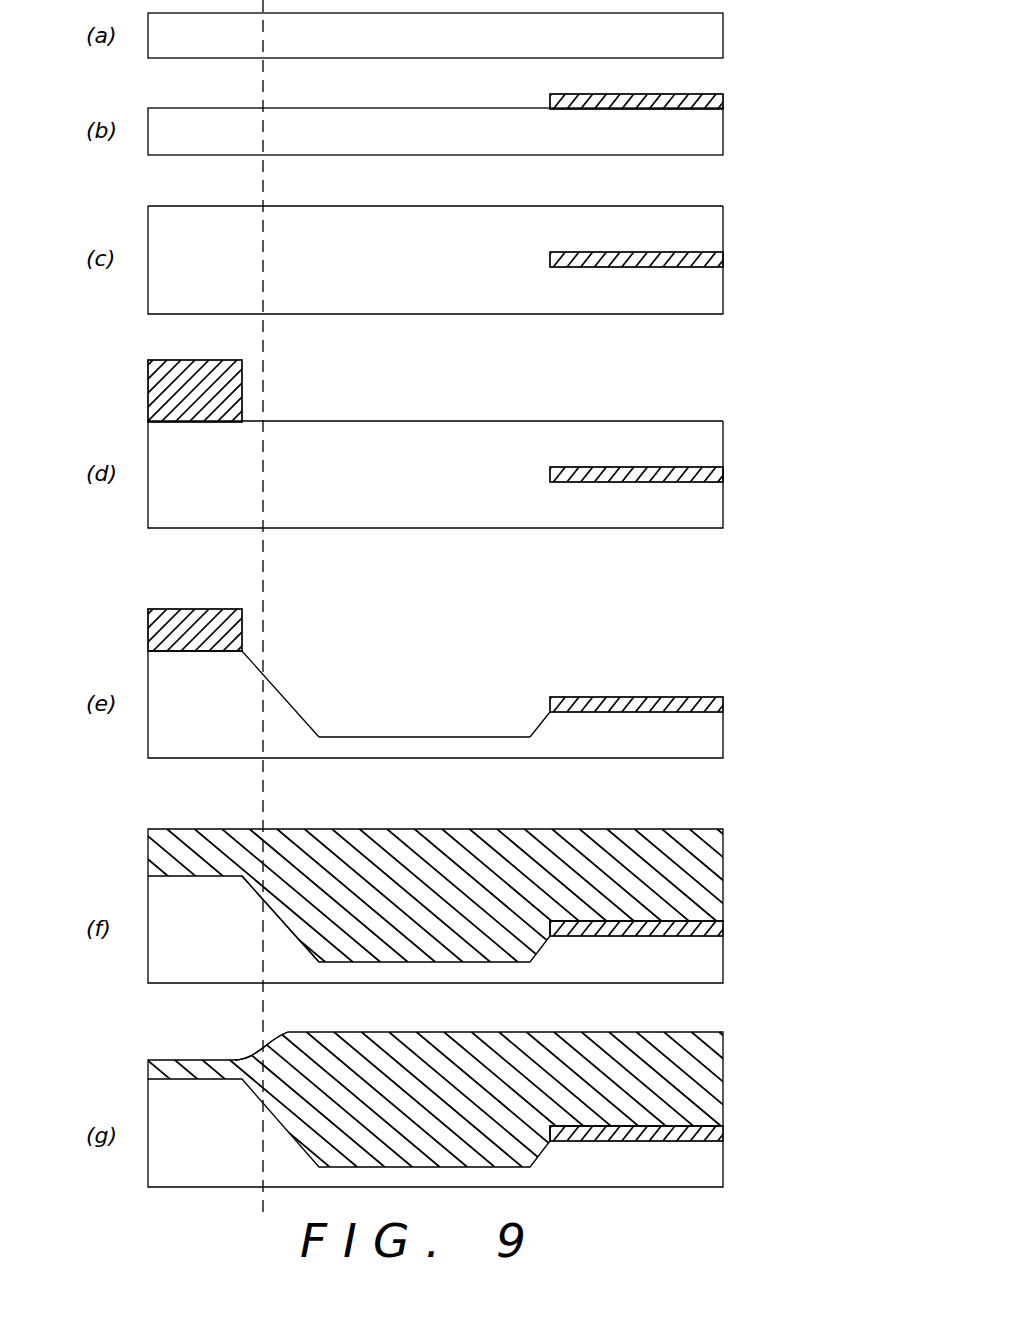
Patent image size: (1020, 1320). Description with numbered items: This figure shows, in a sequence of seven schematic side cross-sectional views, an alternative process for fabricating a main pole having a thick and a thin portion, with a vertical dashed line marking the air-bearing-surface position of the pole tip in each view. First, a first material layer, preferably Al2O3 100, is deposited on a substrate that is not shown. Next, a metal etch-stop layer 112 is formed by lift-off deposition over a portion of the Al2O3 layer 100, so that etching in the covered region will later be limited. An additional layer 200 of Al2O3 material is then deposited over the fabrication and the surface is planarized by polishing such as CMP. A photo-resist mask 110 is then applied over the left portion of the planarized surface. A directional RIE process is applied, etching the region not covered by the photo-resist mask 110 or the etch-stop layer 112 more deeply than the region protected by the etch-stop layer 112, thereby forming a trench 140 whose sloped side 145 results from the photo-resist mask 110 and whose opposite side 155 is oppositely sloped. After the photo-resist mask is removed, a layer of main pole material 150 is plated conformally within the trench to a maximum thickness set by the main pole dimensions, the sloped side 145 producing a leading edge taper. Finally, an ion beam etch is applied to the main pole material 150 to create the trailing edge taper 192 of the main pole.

The Al2O3 layer 100 is at (710, 31).
The metal etch-stop layer 112 is at (712, 101).
The additional Al2O3 layer 200 is at (708, 225).
The photo-resist mask 110 is at (160, 400).
The sloped side of the trench 145 is at (283, 693).
The trench 140 is at (407, 737).
The opposite sloped side of the trench 155 is at (536, 728).
The main pole material layer 150 is at (704, 867).
The trailing edge taper 192 is at (253, 1052).